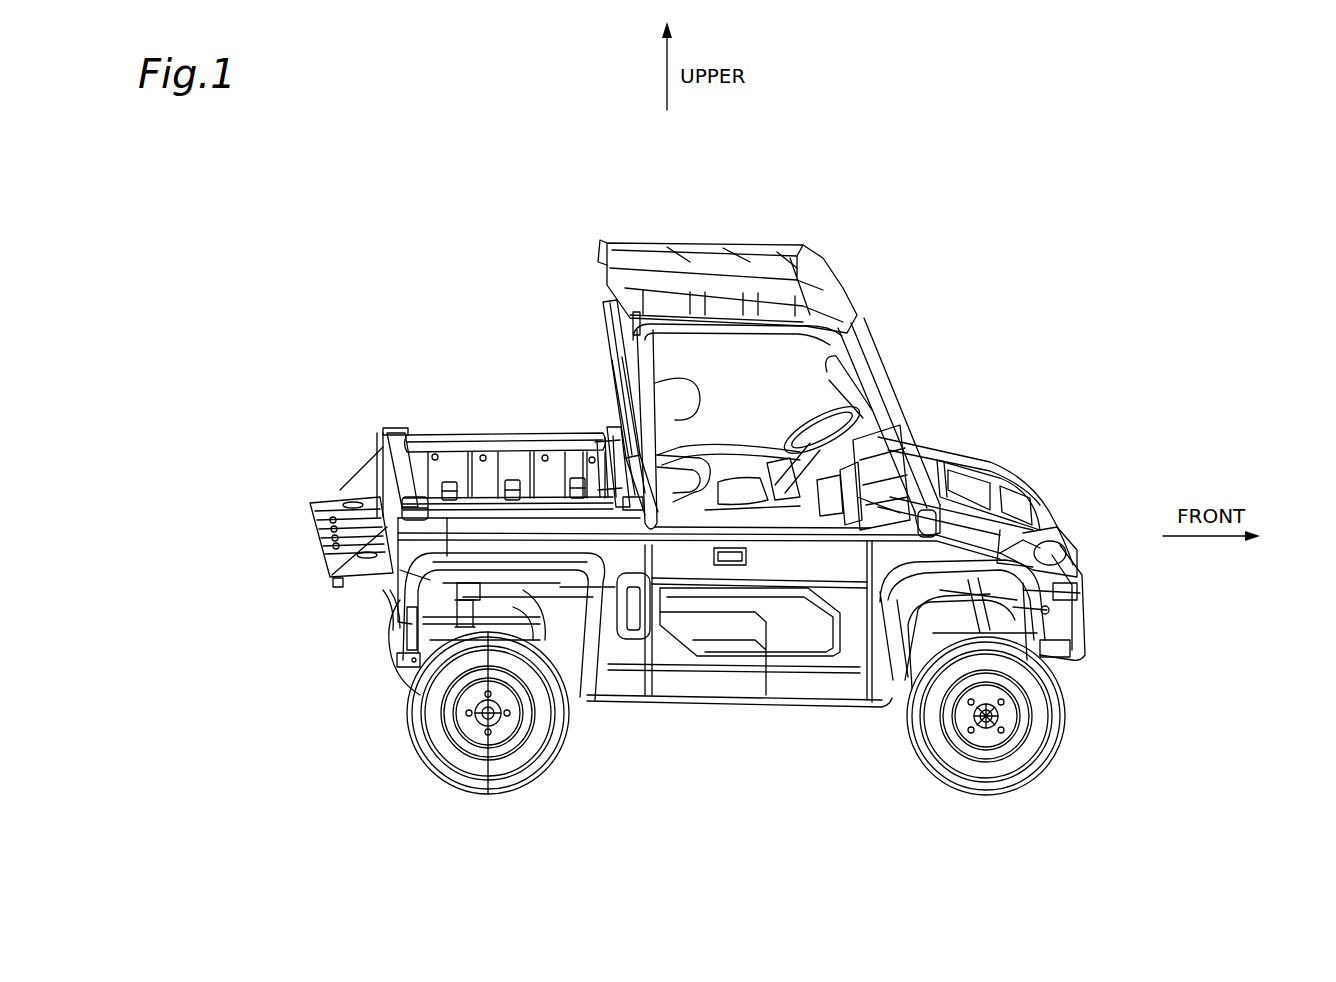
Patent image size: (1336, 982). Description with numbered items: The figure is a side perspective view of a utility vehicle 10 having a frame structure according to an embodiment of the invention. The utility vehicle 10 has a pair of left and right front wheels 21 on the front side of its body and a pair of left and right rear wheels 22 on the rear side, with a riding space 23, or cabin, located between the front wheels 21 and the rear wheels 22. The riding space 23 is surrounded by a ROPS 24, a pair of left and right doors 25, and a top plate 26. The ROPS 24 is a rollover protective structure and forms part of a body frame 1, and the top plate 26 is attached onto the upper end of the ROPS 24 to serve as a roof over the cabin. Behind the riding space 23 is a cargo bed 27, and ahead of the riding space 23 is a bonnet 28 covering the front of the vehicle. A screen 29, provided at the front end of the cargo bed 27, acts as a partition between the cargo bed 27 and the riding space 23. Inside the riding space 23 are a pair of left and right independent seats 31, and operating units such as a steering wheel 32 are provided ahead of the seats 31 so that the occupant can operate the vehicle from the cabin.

The body frame 1 is at (899, 348).
The utility vehicle 10 is at (991, 224).
The front wheels 21 is at (1010, 782).
The rear wheels 22 is at (515, 782).
The riding space (cabin) 23 is at (712, 358).
The ROPS 24 is at (876, 352).
The doors 25 is at (797, 620).
The top plate 26 is at (733, 352).
The cargo bed 27 is at (478, 470).
The bonnet 28 is at (968, 462).
The screen 29 is at (603, 327).
The seats 31 is at (742, 492).
The steering wheel 32 is at (815, 405).